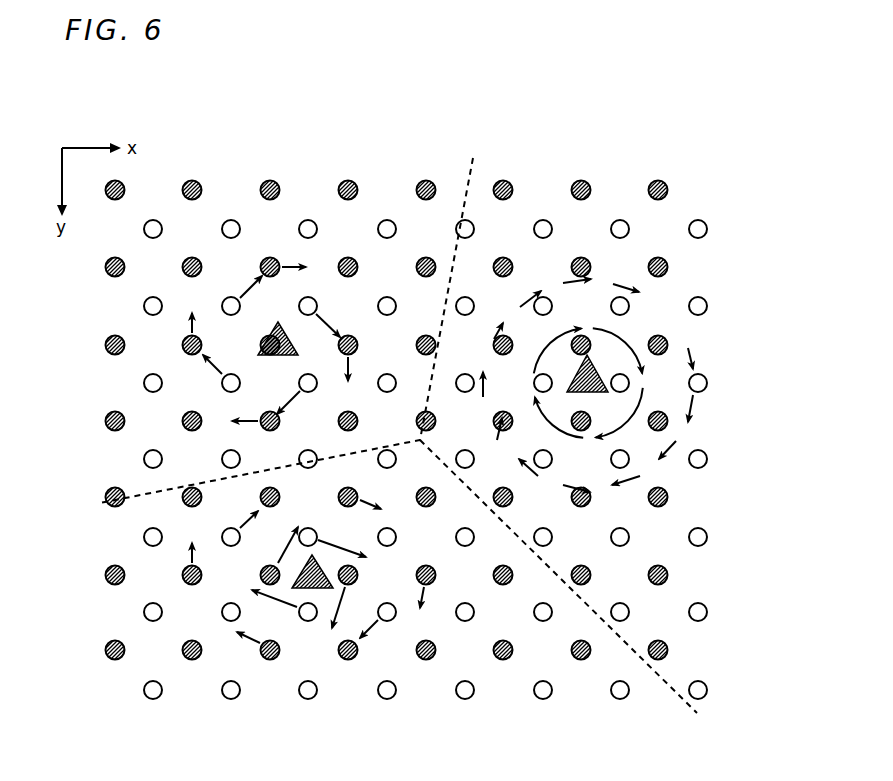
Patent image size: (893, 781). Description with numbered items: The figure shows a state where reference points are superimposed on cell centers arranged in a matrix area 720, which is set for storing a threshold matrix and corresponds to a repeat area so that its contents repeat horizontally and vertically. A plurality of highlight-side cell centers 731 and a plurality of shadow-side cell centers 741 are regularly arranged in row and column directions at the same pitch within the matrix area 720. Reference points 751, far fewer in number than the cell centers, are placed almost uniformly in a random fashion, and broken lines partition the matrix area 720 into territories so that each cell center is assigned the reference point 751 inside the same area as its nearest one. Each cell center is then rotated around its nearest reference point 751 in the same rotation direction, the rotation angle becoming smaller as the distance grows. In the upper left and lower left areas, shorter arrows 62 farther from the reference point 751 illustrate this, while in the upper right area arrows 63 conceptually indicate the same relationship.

The matrix area 720 is at (205, 101).
The shadow-side cell centers 741 is at (348, 183).
The highlight-side cell centers 731 is at (387, 220).
The reference points 751 is at (262, 343).
The arrows 62 is at (247, 288).
The arrows 63 is at (672, 322).